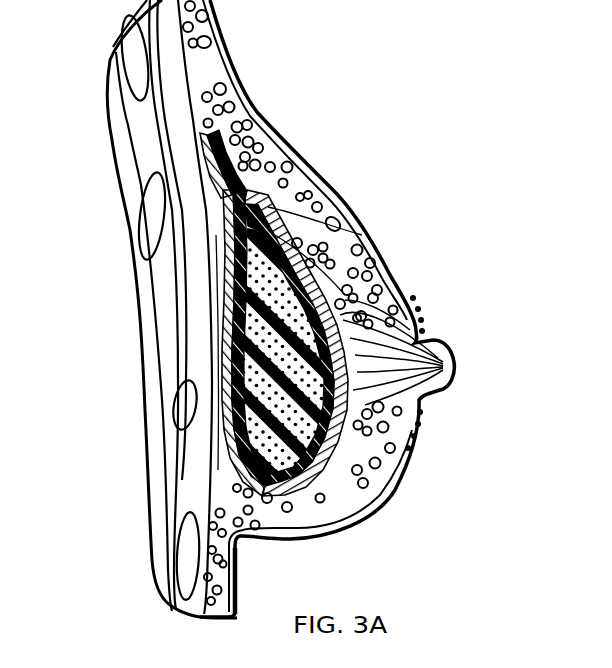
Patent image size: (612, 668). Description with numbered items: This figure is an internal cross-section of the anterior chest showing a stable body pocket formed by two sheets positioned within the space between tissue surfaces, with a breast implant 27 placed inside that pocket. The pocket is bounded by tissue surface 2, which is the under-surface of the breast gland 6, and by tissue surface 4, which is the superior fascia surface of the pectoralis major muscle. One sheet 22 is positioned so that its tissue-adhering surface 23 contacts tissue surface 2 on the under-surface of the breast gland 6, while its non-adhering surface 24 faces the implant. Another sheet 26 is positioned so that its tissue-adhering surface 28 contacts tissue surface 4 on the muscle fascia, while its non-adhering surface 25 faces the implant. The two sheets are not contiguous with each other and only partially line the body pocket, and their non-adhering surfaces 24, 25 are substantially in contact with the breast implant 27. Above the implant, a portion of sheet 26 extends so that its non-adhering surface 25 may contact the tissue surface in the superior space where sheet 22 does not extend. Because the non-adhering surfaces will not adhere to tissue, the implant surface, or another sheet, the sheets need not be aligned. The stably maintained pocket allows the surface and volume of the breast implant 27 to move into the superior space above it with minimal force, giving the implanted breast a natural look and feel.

The tissue surface 2 is at (421, 402).
The tissue surface 4 is at (230, 302).
The breast gland 6 is at (340, 245).
The sheet 22 is at (303, 282).
The tissue-adhering surface 23 is at (270, 205).
The non-adhering surface 24 is at (383, 279).
The non-adhering surface 25 is at (233, 220).
The sheet 26 is at (237, 250).
The breast implant 27 is at (278, 212).
The tissue-adhering surface 28 is at (224, 262).